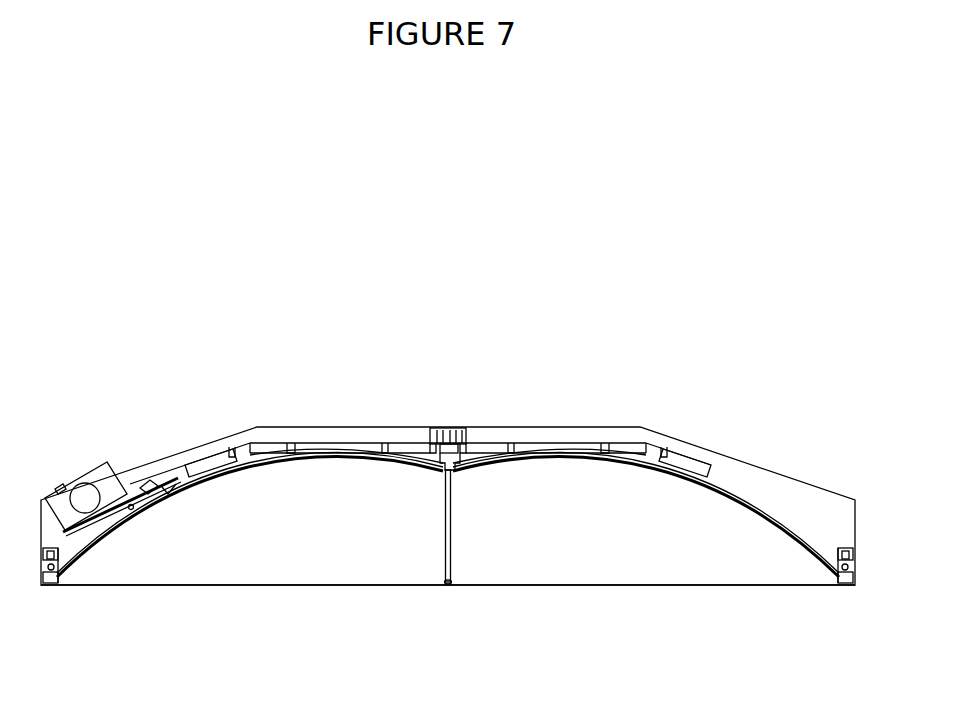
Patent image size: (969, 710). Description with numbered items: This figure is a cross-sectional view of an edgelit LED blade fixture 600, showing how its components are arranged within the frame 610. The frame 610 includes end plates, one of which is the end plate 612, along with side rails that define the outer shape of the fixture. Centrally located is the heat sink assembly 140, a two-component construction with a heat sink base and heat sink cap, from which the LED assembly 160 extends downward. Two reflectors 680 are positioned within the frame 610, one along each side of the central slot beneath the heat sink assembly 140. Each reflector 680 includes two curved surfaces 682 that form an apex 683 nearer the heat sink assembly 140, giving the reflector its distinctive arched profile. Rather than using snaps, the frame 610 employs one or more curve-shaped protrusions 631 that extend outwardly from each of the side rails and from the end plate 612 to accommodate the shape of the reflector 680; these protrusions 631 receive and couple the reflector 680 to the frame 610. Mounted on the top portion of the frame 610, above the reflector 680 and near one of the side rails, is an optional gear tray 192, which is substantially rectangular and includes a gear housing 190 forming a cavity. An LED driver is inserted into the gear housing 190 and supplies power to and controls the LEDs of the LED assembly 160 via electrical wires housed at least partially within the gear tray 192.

The edgelit LED blade fixture 600 is at (448, 463).
The frame 610 is at (708, 436).
The end plate 612 is at (183, 570).
The protrusion 631 is at (178, 468).
The reflector 680 is at (293, 463).
The curved surface 682 is at (212, 482).
The apex 683 is at (337, 458).
The heat sink assembly 140 is at (456, 430).
The LED assembly 160 is at (435, 541).
The gear housing 190 is at (95, 464).
The gear tray 192 is at (150, 474).